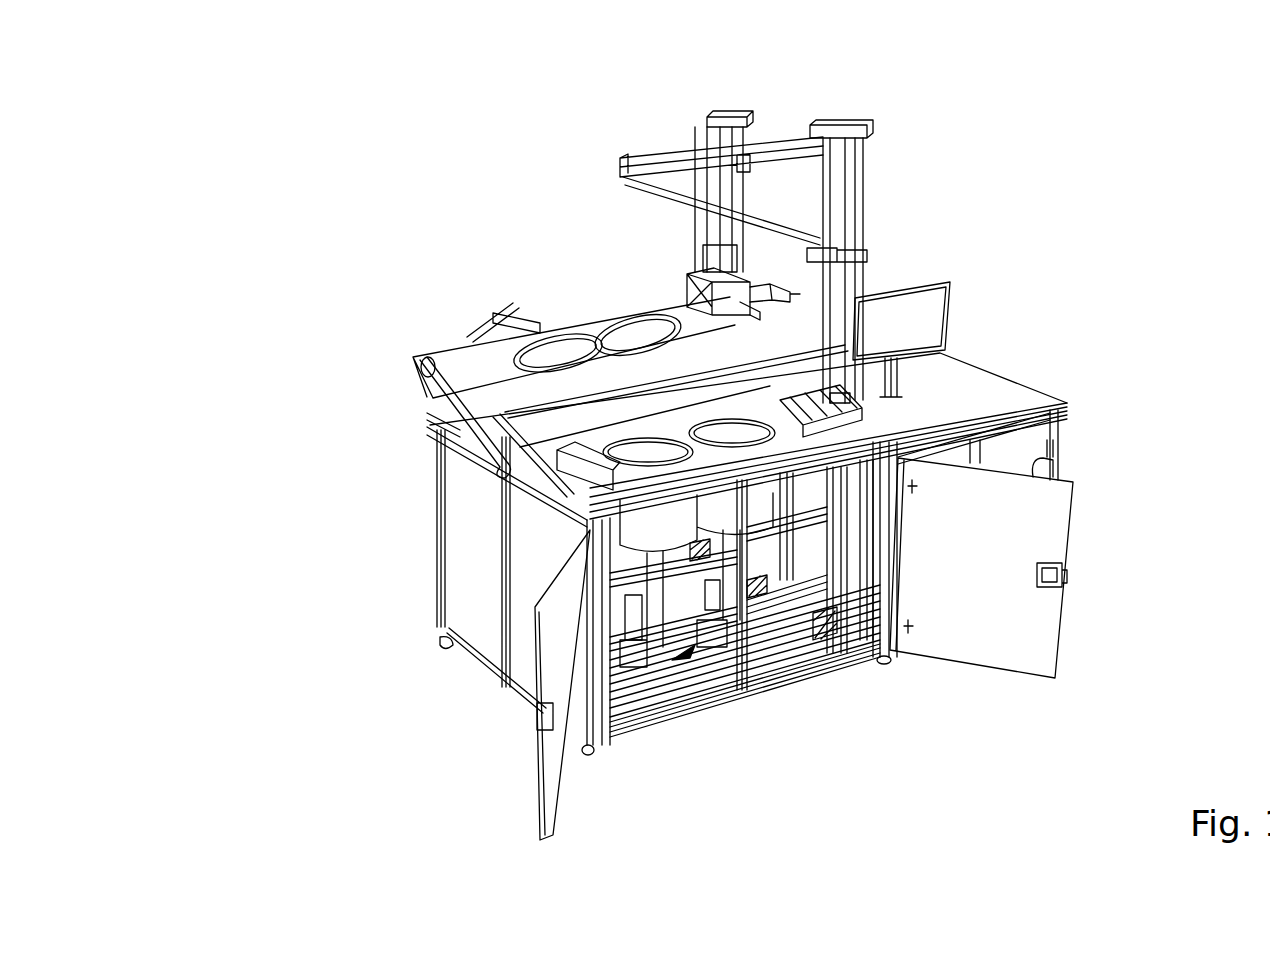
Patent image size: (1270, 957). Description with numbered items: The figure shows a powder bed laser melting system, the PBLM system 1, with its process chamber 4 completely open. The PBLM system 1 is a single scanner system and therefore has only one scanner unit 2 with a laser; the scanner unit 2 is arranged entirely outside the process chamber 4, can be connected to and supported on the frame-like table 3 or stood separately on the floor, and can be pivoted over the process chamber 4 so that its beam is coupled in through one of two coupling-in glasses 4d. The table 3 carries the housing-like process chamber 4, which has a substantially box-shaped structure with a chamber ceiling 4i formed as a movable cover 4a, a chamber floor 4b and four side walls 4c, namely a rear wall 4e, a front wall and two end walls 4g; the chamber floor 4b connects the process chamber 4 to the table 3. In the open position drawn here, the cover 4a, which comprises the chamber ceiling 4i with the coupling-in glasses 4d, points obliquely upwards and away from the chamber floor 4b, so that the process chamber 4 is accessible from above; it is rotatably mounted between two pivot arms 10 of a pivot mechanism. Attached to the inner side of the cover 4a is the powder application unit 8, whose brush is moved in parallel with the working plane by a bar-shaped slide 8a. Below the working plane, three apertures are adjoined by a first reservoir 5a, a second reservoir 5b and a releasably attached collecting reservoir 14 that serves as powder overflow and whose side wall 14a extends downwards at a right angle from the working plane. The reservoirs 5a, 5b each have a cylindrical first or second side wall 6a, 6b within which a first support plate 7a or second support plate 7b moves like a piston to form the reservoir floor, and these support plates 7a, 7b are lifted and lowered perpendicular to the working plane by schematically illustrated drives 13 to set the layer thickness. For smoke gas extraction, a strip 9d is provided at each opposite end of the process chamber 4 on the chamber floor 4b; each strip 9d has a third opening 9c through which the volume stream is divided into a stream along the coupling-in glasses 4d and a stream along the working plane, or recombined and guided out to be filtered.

The PBLM system 1 is at (240, 170).
The scanner unit 2 is at (765, 260).
The table 3 is at (1018, 399).
The process chamber 4 is at (648, 292).
The cover 4a is at (385, 378).
The chamber floor 4b is at (880, 420).
The side walls 4c is at (677, 394).
The end walls 4g is at (463, 360).
The coupling-in glasses 4d is at (560, 327).
The rear wall 4e is at (540, 485).
The chamber ceiling 4i is at (473, 337).
The first reservoir 5a is at (1059, 568).
The first side wall 6a is at (900, 517).
The second reservoir 5b is at (526, 690).
The second side wall 6b is at (583, 587).
The first support plate 7a is at (580, 327).
The second support plate 7b is at (563, 330).
The powder application unit 8 is at (456, 227).
The slide 8a is at (488, 287).
The third opening 9c is at (772, 320).
The strip 9d is at (880, 407).
The pivot arms 10 is at (825, 398).
The drives 13 is at (717, 700).
The collecting reservoir 14 is at (510, 527).
The side wall 14a is at (583, 527).